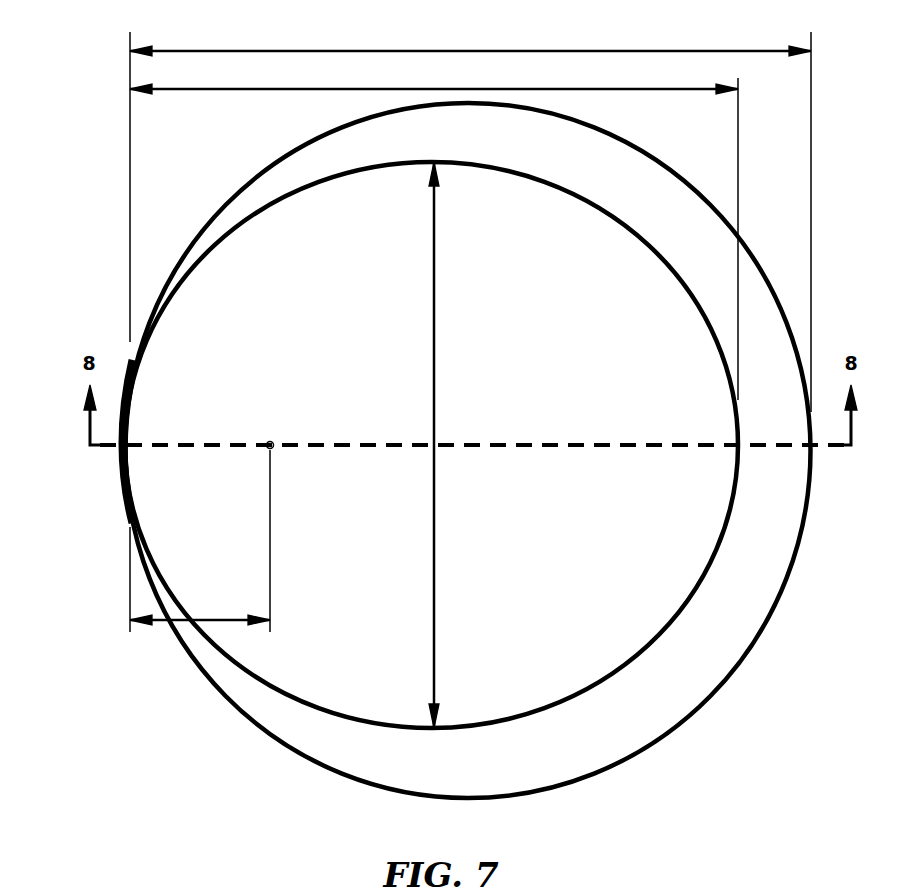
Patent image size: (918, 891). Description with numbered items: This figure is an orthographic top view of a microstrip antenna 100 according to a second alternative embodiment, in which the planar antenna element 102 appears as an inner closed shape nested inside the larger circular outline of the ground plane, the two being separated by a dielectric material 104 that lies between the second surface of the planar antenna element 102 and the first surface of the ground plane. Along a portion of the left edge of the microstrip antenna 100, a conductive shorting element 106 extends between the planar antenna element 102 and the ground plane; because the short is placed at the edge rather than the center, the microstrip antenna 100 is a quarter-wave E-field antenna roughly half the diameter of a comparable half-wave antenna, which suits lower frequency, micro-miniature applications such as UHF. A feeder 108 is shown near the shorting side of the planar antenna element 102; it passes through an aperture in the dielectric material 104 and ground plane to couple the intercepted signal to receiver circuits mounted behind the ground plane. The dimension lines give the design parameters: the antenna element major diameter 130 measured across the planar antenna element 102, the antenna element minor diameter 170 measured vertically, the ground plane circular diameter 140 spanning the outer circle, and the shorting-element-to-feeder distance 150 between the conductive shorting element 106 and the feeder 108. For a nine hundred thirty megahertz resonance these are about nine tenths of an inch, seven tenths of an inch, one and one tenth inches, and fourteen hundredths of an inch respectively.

The microstrip antenna 100 is at (462, 845).
The planar antenna element 102 is at (303, 233).
The dielectric material 104 is at (676, 708).
The conductive shorting element 106 is at (127, 372).
The feeder 108 is at (270, 440).
The antenna element major diameter 130 is at (322, 92).
The ground plane circular diameter 140 is at (605, 48).
The shorting-element-to-feeder distance 150 is at (213, 618).
The antenna element minor diameter 170 is at (434, 400).